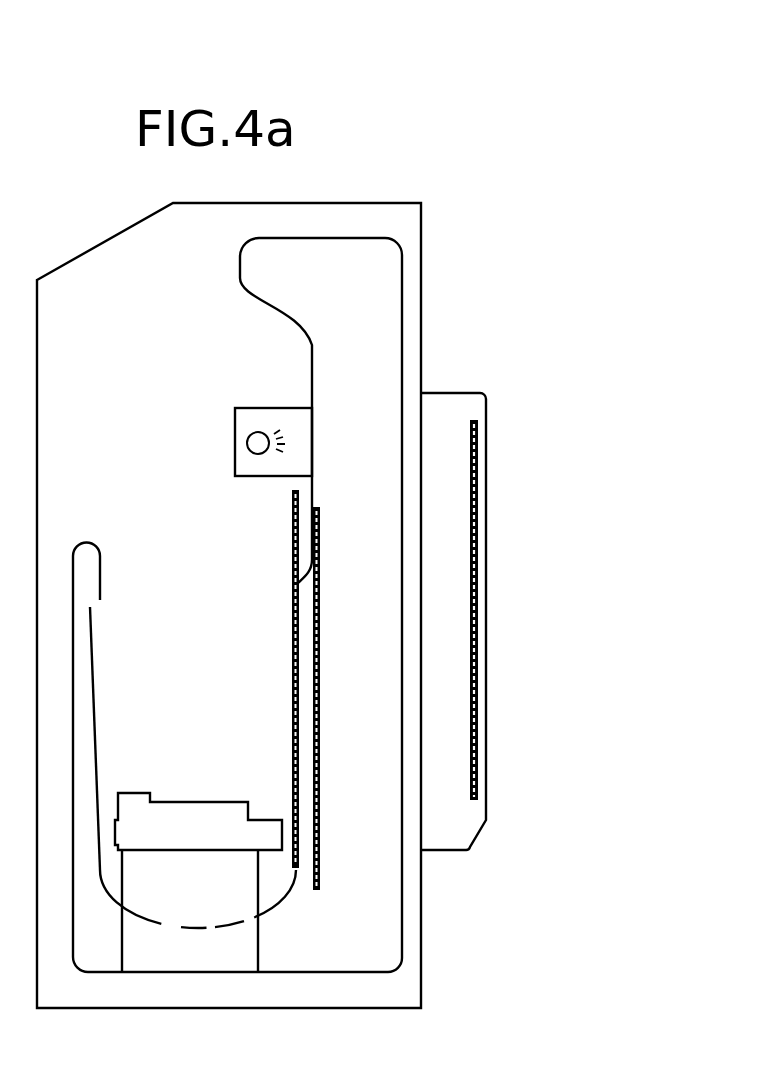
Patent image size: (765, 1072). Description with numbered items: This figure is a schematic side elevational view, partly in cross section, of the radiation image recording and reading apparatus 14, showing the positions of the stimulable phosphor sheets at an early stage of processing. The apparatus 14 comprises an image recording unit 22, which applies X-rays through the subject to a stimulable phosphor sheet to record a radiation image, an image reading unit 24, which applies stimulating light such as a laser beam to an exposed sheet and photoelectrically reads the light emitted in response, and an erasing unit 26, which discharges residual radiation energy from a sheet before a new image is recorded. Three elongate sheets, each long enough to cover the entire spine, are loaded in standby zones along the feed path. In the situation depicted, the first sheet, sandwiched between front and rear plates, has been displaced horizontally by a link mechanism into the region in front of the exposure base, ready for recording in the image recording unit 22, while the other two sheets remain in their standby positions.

The radiation image recording and reading apparatus 14 is at (343, 199).
The image recording unit 22 is at (497, 402).
The image reading unit 24 is at (191, 798).
The erasing unit 26 is at (245, 407).